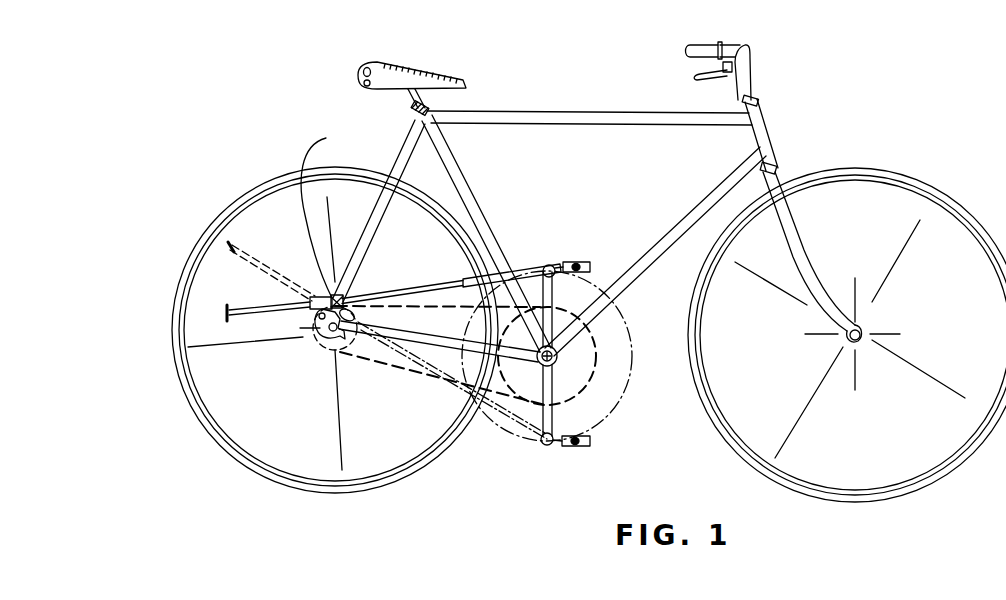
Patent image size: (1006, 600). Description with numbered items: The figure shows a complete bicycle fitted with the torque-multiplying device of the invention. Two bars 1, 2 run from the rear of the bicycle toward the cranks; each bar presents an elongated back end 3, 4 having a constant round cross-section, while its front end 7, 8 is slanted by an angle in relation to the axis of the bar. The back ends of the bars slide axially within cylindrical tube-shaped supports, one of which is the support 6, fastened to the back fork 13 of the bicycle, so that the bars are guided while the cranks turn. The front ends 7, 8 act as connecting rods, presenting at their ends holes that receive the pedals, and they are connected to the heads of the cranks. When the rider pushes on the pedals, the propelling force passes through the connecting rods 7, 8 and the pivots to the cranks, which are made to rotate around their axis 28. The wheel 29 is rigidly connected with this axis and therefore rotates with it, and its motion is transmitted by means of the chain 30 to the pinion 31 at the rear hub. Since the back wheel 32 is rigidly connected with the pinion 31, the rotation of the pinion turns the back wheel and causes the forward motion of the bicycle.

The bar 1 is at (505, 432).
The bar 2 is at (527, 260).
The elongated back end 3 is at (265, 267).
The elongated back end 4 is at (247, 308).
The cylindrical tube-shaped support 6 is at (319, 215).
The front end (connecting rod) 7 is at (548, 446).
The front end (connecting rod) 8 is at (558, 262).
The back fork 13 is at (410, 157).
The axis 28 is at (554, 361).
The wheel 29 is at (592, 340).
The chain 30 is at (402, 375).
The pinion 31 is at (327, 348).
The back wheel 32 is at (200, 413).